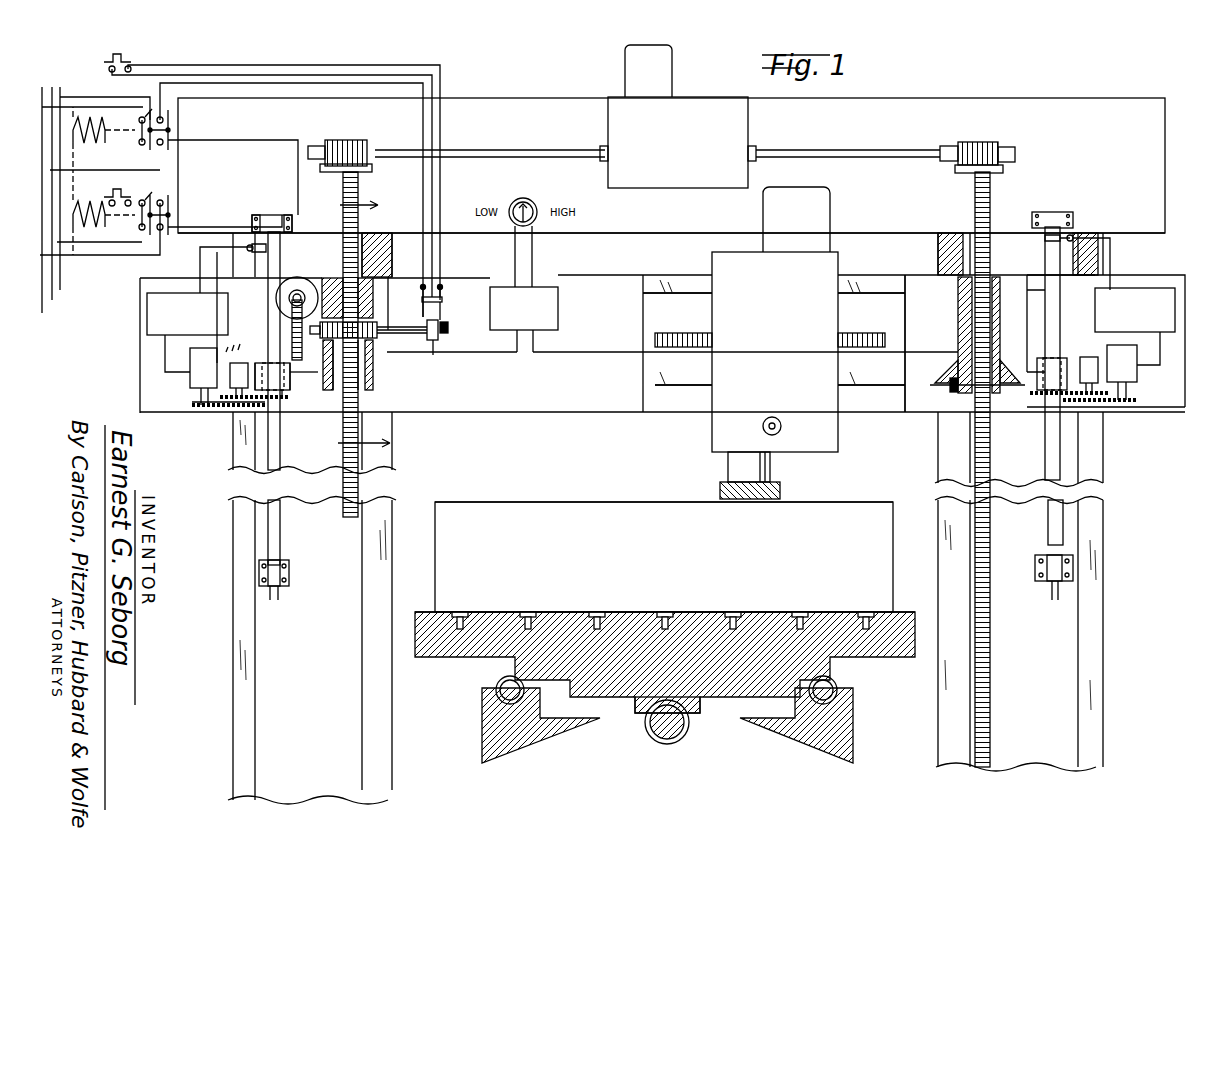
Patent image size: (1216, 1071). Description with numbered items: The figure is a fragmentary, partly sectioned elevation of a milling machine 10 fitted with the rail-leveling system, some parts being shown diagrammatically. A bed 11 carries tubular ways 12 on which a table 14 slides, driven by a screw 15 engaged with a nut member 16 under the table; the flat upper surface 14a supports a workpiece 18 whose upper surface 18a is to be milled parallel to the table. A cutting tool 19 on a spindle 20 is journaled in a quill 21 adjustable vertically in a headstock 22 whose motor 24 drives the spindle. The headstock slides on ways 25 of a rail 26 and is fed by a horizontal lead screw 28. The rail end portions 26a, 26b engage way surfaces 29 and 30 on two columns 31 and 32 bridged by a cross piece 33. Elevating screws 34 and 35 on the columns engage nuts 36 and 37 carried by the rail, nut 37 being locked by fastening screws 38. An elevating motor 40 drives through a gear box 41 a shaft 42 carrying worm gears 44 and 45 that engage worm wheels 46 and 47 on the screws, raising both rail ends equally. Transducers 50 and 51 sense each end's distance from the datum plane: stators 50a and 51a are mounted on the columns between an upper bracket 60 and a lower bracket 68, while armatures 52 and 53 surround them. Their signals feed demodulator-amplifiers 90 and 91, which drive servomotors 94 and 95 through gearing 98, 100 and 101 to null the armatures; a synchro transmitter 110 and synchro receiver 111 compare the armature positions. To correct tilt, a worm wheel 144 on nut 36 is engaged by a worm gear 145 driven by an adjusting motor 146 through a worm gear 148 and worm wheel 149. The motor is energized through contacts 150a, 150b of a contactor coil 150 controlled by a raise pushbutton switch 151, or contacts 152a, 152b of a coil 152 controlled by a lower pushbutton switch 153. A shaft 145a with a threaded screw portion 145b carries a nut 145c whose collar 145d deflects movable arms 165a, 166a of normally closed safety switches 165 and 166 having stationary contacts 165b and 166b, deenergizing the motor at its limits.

The milling machine 10 is at (905, 100).
The bed 11 is at (490, 737).
The tubular ways 12 is at (495, 689).
The table 14 is at (760, 612).
The upper surface of table 14a is at (700, 612).
The screw 15 is at (652, 733).
The nut member 16 is at (700, 712).
The workpiece 18 is at (503, 502).
The upper surface of workpiece 18a is at (580, 502).
The cutting tool 19 is at (720, 494).
The spindle 20 is at (767, 480).
The quill 21 is at (735, 462).
The headstock 22 is at (726, 428).
The motor 24 is at (830, 218).
The ways 25 is at (872, 276).
The rail 26 is at (923, 270).
The left end portion of rail 26a is at (233, 421).
The right end portion of rail 26b is at (1167, 414).
The horizontal lead screw 28 is at (862, 333).
The way surfaces 29 is at (236, 471).
The way surfaces 30 is at (942, 480).
The column 31 is at (228, 640).
The column 32 is at (1111, 651).
The cross piece 33 is at (995, 98).
The elevating screw 34 is at (343, 478).
The elevating screw 35 is at (990, 492).
The nut 36 is at (372, 280).
The nut 37 is at (958, 320).
The fastening screws 38 is at (950, 388).
The elevating motor 40 is at (668, 76).
The gear box 41 is at (704, 108).
The shaft 42 is at (562, 150).
The worm gear 44 is at (357, 142).
The worm gear 45 is at (982, 142).
The worm wheel 46 is at (314, 146).
The worm wheel 47 is at (1015, 152).
The transducer 50 is at (281, 423).
The stator 50a is at (280, 528).
The transducer 51 is at (1045, 437).
The stator 51a is at (1048, 528).
The armature 52 is at (288, 383).
The armature 53 is at (1037, 397).
The upper bracket 60 is at (274, 215).
The lower bracket 68 is at (290, 574).
The demodulator-amplifier 90 is at (147, 318).
The demodulator-amplifier 91 is at (1152, 288).
The servomotor 94 is at (197, 378).
The servomotor 95 is at (1135, 376).
The gearing 98 is at (200, 408).
The gearing 100 is at (292, 398).
The gearing 101 is at (1130, 403).
The synchro transmitter 110 is at (1092, 358).
The synchro receiver 111 is at (237, 370).
The worm wheel 144 is at (368, 340).
The worm gear 145 is at (405, 340).
The shaft 145a is at (420, 334).
The threaded screw portion 145b is at (433, 345).
The nut 145c is at (438, 336).
The collar 145d is at (448, 328).
The adjusting motor 146 is at (306, 285).
The worm gear 148 is at (288, 296).
The worm wheel 149 is at (298, 355).
The contactor coil 150 is at (89, 141).
The contacts 150a is at (172, 110).
The contacts 150b is at (176, 143).
The raise pushbutton switch 151 is at (138, 61).
The contactor coil 152 is at (98, 200).
The contacts 152a is at (165, 198).
The contacts 152b is at (176, 221).
The lower pushbutton switch 153 is at (107, 192).
The safety switch 165 is at (443, 298).
The movable arm 165a is at (442, 310).
The stationary contact 165b is at (443, 289).
The safety switch 166 is at (417, 304).
The movable arm 166a is at (423, 308).
The stationary contact 166b is at (421, 288).